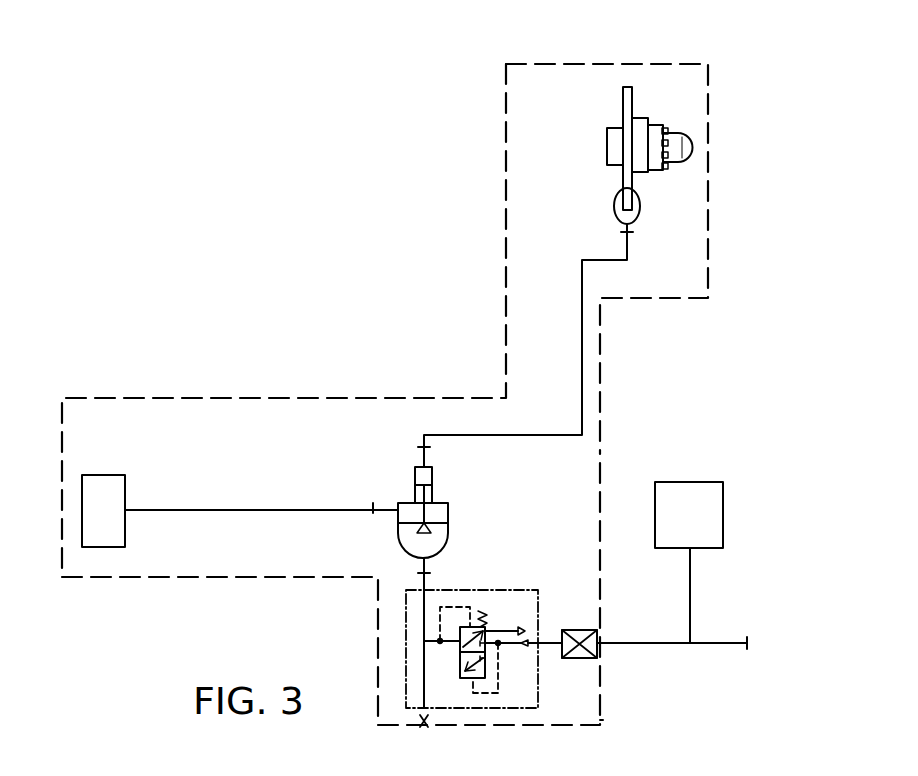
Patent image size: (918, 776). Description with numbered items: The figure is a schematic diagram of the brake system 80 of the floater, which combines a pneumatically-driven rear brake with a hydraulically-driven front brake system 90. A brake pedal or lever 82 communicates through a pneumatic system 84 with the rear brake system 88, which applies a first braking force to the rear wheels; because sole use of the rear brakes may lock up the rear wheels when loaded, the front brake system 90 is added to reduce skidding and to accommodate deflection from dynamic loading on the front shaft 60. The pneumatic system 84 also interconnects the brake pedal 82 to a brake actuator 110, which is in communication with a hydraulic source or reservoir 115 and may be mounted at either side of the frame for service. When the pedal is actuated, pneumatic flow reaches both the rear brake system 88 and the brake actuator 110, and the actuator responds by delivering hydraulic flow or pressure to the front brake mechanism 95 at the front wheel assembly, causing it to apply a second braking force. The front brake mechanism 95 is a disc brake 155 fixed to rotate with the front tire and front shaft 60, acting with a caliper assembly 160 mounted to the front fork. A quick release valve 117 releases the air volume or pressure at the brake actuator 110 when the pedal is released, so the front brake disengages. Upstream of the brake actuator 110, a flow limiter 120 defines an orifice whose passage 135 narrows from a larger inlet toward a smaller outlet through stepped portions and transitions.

The brake system 80 is at (238, 230).
The front brake system 90 is at (708, 203).
The front shaft 60 is at (695, 133).
The disc brake 155 is at (623, 108).
The front brake mechanism 95 is at (655, 95).
The caliper assembly 160 is at (640, 217).
The brake actuator 110 is at (453, 527).
The hydraulic source or reservoir 115 is at (125, 492).
The quick release valve 117 is at (480, 710).
The flow limiter 120 is at (568, 630).
The rear brake system 88 is at (723, 502).
The pneumatic system 84 is at (713, 645).
The brake pedal or lever 82 is at (750, 627).
The passage 135 is at (634, 748).